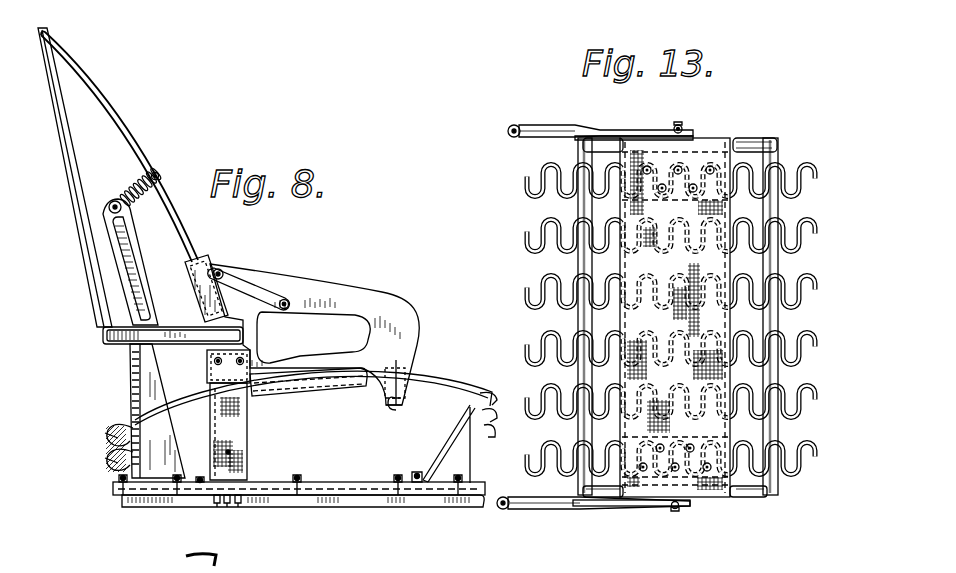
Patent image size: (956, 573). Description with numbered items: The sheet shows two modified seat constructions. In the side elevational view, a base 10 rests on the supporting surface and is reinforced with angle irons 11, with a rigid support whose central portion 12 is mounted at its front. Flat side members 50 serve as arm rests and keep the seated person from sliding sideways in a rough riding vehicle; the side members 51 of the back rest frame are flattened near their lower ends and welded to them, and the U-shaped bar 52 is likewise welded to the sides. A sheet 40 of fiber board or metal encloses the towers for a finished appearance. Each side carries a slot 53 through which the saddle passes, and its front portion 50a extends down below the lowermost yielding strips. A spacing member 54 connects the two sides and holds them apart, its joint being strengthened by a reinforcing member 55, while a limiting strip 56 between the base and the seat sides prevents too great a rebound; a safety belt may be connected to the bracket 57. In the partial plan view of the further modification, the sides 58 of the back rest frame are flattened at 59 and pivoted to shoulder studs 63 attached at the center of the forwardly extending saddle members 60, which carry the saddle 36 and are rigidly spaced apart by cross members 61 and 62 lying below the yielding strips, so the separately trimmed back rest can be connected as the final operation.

In FIG. 8, the sheet 40 is at (80, 240).
In FIG. 8, the side members of the back rest frame 51 is at (133, 137).
In FIG. 8, the U-shaped bar 52 is at (123, 346).
In FIG. 8, the angle irons 11 is at (228, 358).
In FIG. 8, the slot 53 is at (248, 397).
In FIG. 8, the side members 50 is at (358, 295).
In FIG. 8, the bracket 57 is at (255, 300).
In FIG. 8, the base 10 is at (180, 287).
In FIG. 8, the reinforcing member 55 is at (397, 367).
In FIG. 8, the central portion 12 is at (403, 363).
In FIG. 8, the front portion of the side members 50a is at (385, 400).
In FIG. 8, the spacing member 54 is at (398, 410).
In FIG. 8, the limiting strip 56 is at (228, 452).
In FIG. 13, the cross member 62 is at (586, 153).
In FIG. 13, the cross member 61 is at (775, 145).
In FIG. 13, the saddle members 60 is at (747, 140).
In FIG. 13, the saddle 36 is at (700, 150).
In FIG. 13, the flattened portion 59 is at (622, 135).
In FIG. 13, the sides of the back rest frame 58 is at (533, 127).
In FIG. 13, the shoulder stud 63 is at (680, 127).